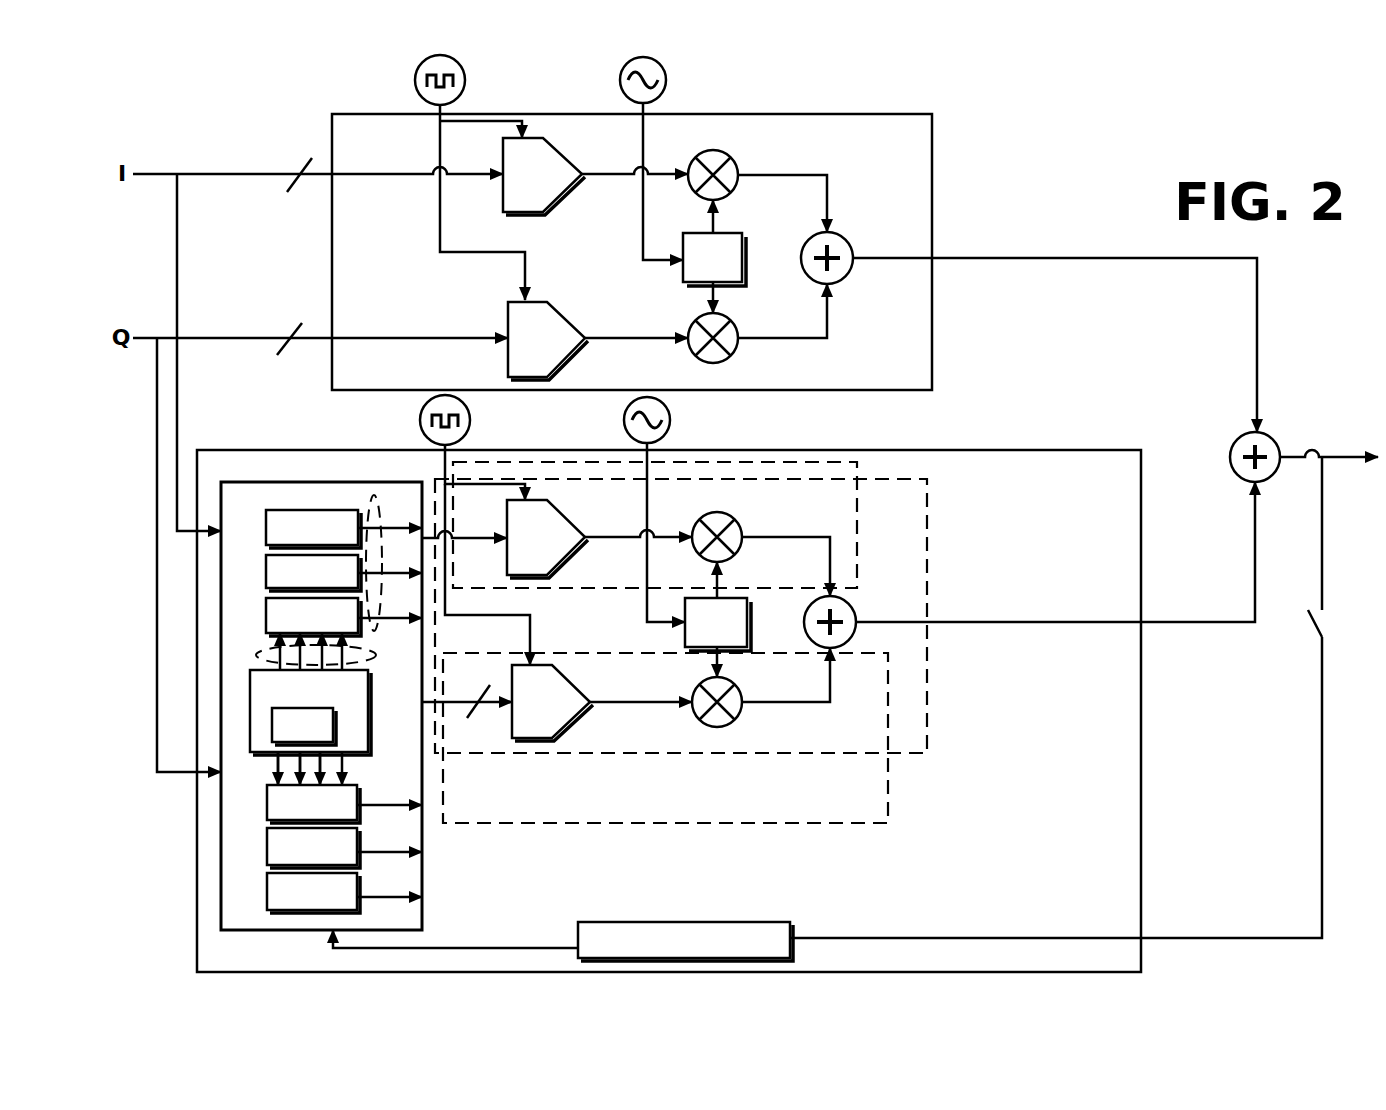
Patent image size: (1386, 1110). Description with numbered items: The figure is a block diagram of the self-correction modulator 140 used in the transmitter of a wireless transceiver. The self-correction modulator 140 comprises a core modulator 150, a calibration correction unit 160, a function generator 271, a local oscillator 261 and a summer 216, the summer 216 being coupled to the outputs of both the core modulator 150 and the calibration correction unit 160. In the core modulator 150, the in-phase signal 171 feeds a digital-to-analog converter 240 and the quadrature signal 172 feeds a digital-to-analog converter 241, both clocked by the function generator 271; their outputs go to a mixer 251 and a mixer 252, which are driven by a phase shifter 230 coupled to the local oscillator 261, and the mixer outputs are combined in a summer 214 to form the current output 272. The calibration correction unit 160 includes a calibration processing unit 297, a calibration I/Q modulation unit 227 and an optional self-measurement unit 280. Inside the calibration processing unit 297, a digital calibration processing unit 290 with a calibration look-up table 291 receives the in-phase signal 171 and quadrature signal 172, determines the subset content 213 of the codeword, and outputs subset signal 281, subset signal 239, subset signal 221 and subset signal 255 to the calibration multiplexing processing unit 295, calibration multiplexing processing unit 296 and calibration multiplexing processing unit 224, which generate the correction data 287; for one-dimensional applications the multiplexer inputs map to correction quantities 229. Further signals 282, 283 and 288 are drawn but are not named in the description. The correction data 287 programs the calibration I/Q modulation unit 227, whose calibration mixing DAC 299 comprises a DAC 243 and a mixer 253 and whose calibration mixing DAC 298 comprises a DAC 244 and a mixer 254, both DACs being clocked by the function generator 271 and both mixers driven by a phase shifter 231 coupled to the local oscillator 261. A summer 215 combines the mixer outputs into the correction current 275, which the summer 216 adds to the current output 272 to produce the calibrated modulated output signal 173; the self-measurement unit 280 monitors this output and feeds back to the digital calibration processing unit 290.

The self-correction modulator 140 is at (1078, 108).
The core modulator 150 is at (932, 186).
The calibration correction unit 160 is at (1141, 795).
The in-phase signal 171 is at (153, 173).
The quadrature signal 172 is at (137, 337).
The calibrated modulated output signal 173 is at (1325, 455).
The subset content 213 is at (262, 650).
The summer 214 is at (845, 240).
The summer 215 is at (852, 603).
The summer 216 is at (1275, 435).
The subset signal 221 is at (345, 665).
The calibration multiplexing processing unit 224 is at (313, 711).
The calibration I/Q modulation unit 227 is at (927, 725).
The correction quantities 229 is at (398, 524).
The phase shifter 230 is at (714, 256).
The phase shifter 231 is at (718, 619).
The subset signal 239 is at (263, 648).
The digital-to-analog converter 240 is at (575, 160).
The digital-to-analog converter 241 is at (560, 300).
The DAC 243 is at (578, 515).
The DAC 244 is at (565, 668).
The mixer 251 is at (725, 152).
The mixer 252 is at (738, 352).
The mixer 253 is at (745, 515).
The mixer 254 is at (742, 718).
The subset signal 255 is at (350, 650).
The local oscillator 261 is at (666, 80).
The function generator 271 is at (465, 80).
The current output 272 is at (1257, 300).
The correction current 275 is at (1180, 625).
The self-measurement unit 280 is at (563, 941).
The subset signal 281 is at (270, 666).
The signal 282 is at (393, 568).
The signal 283 is at (395, 613).
The correction data 287 is at (372, 495).
The mixer output signal 288 is at (762, 533).
The digital calibration processing unit 290 is at (336, 783).
The calibration look-up table 291 is at (304, 726).
The calibration multiplexing processing unit 295 is at (313, 710).
The calibration multiplexing processing unit 296 is at (313, 711).
The calibration processing unit 297 is at (321, 706).
The calibration mixing DAC 298 is at (888, 823).
The calibration mixing DAC 299 is at (848, 463).